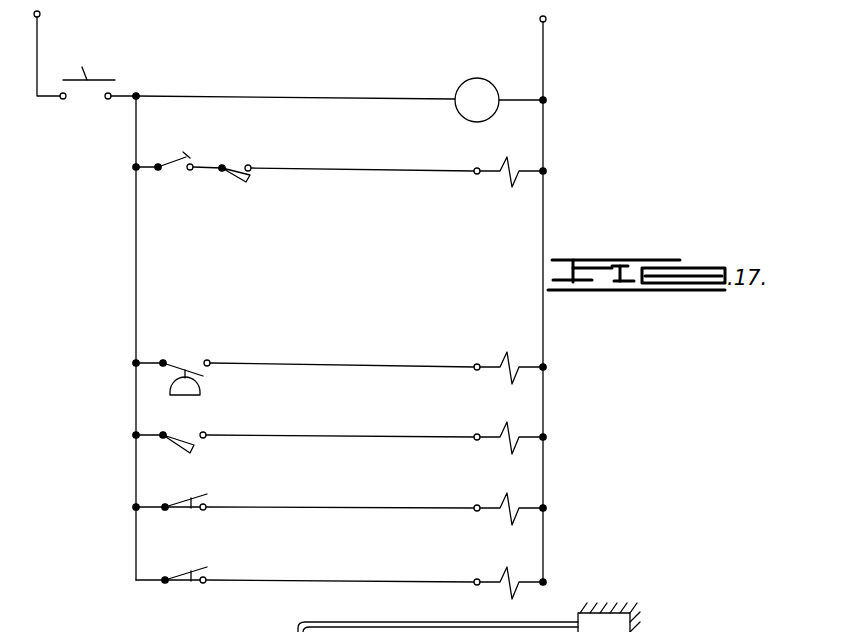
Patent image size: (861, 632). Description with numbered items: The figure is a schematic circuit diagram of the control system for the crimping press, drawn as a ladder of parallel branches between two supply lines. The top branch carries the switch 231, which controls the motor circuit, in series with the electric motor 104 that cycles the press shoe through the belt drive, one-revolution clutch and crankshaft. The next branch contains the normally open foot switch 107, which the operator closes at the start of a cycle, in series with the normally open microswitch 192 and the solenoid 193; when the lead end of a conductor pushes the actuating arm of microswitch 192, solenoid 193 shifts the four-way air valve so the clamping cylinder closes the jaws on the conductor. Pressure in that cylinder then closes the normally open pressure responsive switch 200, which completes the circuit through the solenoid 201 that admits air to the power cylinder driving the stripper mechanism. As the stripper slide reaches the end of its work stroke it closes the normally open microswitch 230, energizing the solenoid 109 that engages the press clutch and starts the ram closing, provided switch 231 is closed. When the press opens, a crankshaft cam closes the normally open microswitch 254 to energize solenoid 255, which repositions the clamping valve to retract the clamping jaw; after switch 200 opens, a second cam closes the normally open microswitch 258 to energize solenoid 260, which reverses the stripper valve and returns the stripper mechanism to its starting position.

The switch 231 is at (112, 89).
The electric motor 104 is at (482, 78).
The foot switch 107 is at (196, 156).
The microswitch 192 is at (238, 163).
The solenoid 193 is at (510, 142).
The solenoid 201 is at (512, 318).
The pressure responsive switch 200 is at (208, 371).
The solenoid 109 is at (509, 405).
The microswitch 230 is at (208, 443).
The solenoid 255 is at (514, 472).
The microswitch 254 is at (191, 514).
The solenoid 260 is at (500, 578).
The microswitch 258 is at (191, 587).